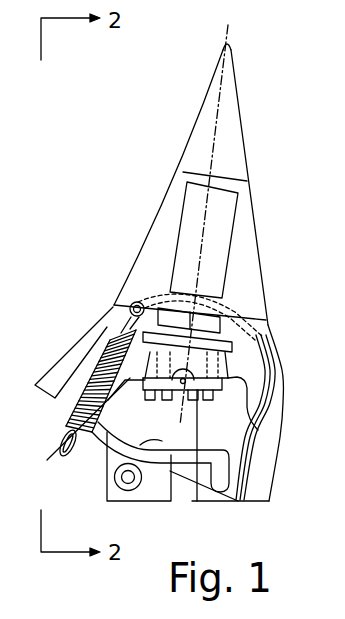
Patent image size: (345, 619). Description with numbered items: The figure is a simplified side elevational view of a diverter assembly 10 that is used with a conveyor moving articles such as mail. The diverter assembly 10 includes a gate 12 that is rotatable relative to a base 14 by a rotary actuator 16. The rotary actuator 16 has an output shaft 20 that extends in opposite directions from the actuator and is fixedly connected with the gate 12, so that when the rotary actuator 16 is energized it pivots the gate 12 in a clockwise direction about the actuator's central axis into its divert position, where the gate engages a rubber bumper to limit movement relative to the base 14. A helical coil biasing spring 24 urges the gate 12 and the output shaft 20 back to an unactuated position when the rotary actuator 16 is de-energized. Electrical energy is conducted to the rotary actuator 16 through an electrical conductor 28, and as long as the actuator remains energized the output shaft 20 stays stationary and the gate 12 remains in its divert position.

The diverter assembly 10 is at (134, 168).
The gate 12 is at (230, 140).
The base 14 is at (258, 468).
The rotary actuator 16 is at (255, 372).
The output shaft 20 is at (187, 373).
The helical coil biasing spring 24 is at (112, 358).
The electrical conductor 28 is at (181, 457).